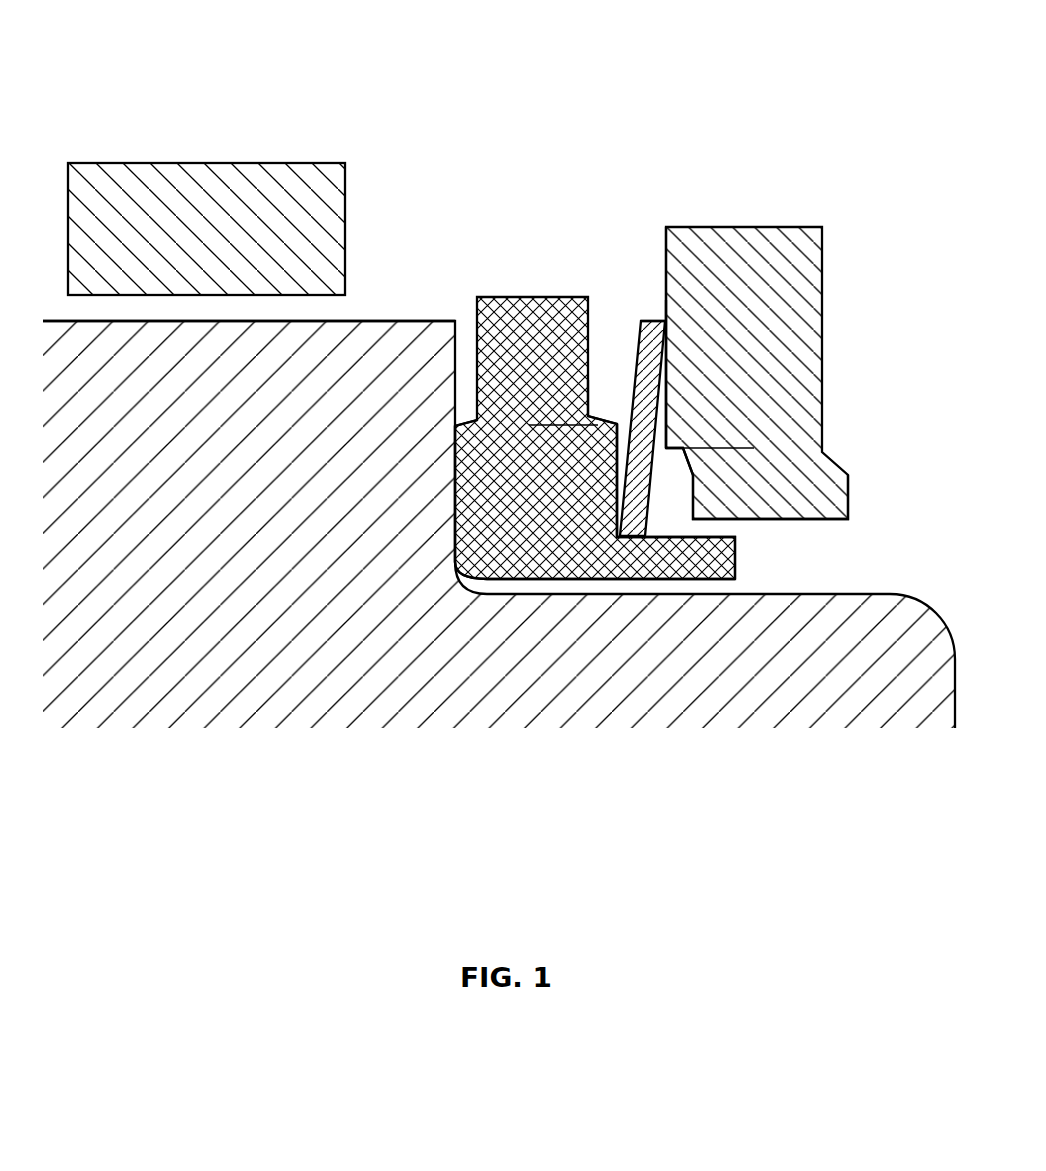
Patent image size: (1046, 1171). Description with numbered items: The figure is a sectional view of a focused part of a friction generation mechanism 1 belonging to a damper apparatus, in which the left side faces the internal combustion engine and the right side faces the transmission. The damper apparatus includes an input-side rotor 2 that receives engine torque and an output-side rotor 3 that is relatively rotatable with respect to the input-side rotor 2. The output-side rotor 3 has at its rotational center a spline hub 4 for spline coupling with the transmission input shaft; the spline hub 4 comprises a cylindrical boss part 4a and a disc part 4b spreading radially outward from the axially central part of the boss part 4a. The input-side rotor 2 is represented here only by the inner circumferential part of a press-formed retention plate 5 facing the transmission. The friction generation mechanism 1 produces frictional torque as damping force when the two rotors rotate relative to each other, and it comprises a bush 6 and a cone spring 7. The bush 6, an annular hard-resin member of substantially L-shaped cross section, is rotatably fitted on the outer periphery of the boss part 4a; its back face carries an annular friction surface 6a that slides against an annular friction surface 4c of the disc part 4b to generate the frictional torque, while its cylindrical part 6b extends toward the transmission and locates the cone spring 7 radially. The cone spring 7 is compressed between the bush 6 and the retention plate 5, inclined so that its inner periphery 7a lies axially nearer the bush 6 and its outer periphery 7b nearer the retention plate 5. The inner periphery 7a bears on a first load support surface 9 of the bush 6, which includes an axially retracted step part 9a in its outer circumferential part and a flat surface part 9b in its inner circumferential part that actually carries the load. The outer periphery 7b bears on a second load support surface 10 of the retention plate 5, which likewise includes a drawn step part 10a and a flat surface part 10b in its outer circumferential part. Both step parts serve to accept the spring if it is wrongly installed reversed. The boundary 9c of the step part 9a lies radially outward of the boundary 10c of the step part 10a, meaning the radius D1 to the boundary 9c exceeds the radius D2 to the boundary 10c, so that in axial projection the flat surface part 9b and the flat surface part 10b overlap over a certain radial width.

The friction generation mechanism 1 is at (597, 156).
The input-side rotor 2 is at (806, 304).
The output-side rotor 3 is at (499, 532).
The spline hub 4 is at (499, 511).
The boss part 4a is at (835, 692).
The disc part 4b is at (341, 347).
The annular friction surface 4c is at (497, 582).
The retention plate 5 is at (806, 328).
The bush 6 is at (526, 499).
The annular friction surface 6a is at (453, 540).
The cylindrical part 6b is at (683, 583).
The cone spring 7 is at (657, 478).
The inner periphery 7a is at (637, 538).
The outer periphery 7b is at (641, 318).
The first load support surface 9 is at (472, 357).
The step part 9a is at (627, 417).
The flat surface part 9b is at (617, 454).
The boundary 9c is at (626, 418).
The second load support surface 10 is at (667, 258).
The step part 10a is at (695, 490).
The flat surface part 10b is at (747, 292).
The boundary 10c is at (662, 458).
The radius D1 is at (562, 440).
The radius D2 is at (723, 463).